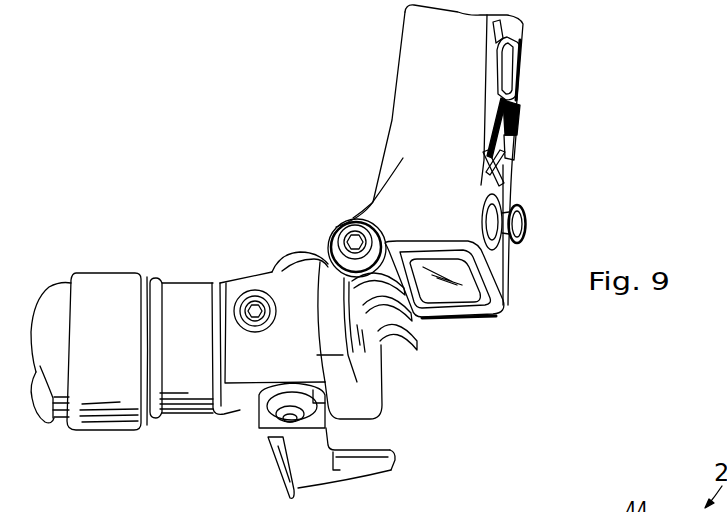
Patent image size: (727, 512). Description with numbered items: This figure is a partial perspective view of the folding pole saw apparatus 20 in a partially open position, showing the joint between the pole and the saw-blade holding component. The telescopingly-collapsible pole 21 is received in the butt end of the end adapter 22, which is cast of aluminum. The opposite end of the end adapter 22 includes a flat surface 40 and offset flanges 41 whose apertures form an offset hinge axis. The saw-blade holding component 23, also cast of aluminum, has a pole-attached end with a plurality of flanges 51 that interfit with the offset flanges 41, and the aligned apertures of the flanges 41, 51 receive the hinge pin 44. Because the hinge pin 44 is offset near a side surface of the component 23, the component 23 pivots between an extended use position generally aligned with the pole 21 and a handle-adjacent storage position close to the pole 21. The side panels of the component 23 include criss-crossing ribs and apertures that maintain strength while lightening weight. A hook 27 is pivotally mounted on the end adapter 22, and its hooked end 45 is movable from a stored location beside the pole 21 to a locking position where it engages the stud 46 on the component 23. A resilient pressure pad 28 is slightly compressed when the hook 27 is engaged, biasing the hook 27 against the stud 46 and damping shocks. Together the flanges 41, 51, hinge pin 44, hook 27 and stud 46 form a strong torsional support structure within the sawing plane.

The pole saw apparatus 20 is at (160, 127).
The pole 21 is at (55, 296).
The end adapter 22 is at (240, 405).
The saw-blade holding component 23 is at (520, 87).
The hook 27 is at (324, 464).
The pressure pad 28 is at (485, 318).
The flat surface 40 is at (383, 392).
The offset flanges 41 is at (421, 317).
The hinge pin 44 is at (352, 220).
The hooked end 45 is at (375, 471).
The stud 46 is at (527, 226).
The flanges 51 is at (330, 234).